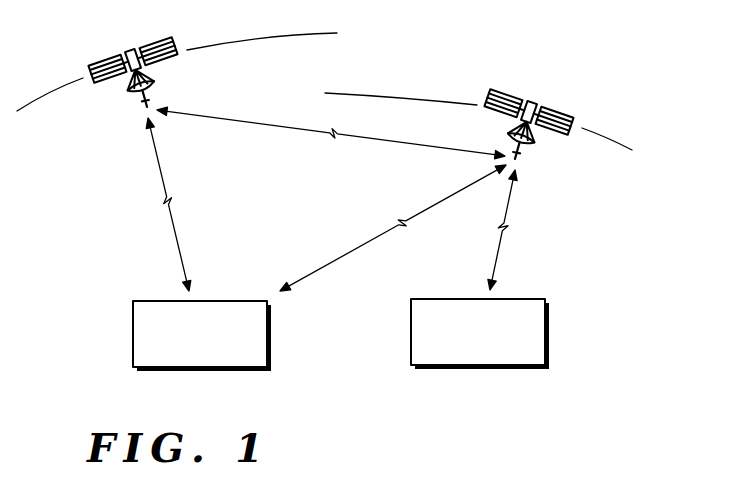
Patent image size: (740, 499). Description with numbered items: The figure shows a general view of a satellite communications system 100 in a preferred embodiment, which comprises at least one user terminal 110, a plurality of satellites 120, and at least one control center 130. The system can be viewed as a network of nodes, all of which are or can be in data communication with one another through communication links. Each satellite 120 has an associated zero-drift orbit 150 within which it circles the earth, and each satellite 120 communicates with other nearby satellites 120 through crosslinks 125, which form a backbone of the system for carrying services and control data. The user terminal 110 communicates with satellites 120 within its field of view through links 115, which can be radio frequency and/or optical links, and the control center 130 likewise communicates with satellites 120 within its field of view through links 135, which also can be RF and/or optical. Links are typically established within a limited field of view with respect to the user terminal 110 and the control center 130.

The communications system 100 is at (357, 429).
The user terminal 110 is at (133, 333).
The link 115 is at (176, 248).
The satellite 120 is at (130, 43).
The crosslink 125 is at (270, 124).
The control center 130 is at (547, 333).
The link 135 is at (502, 247).
The zero-drift orbit 150 is at (278, 34).